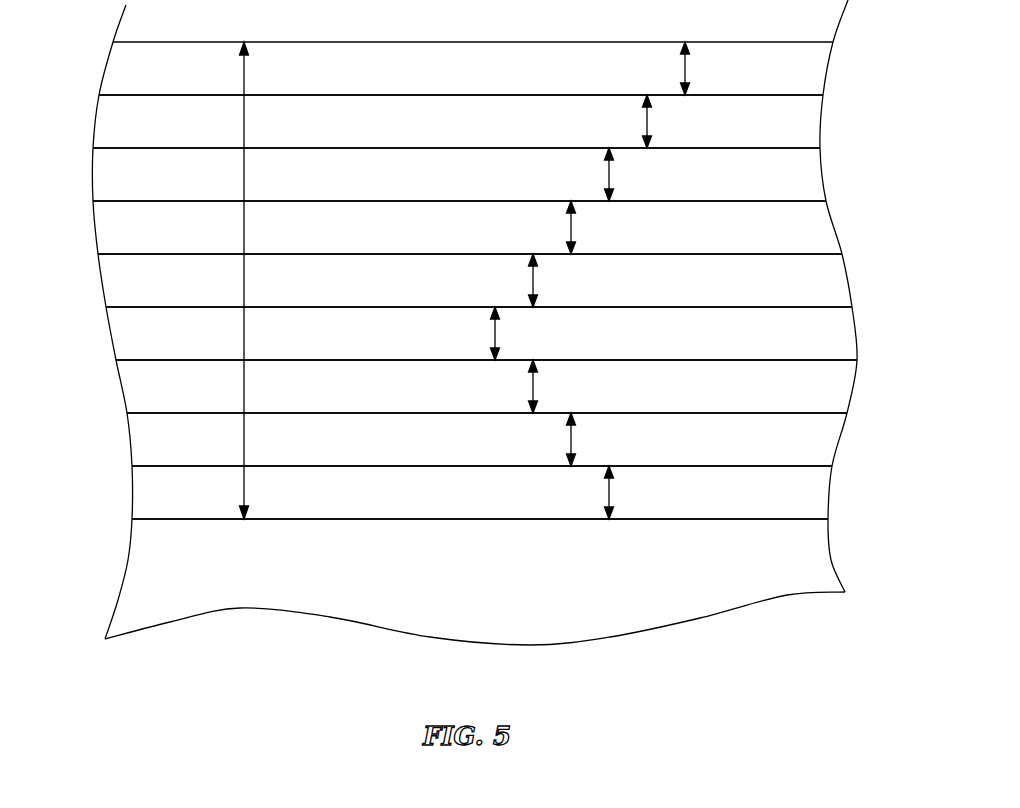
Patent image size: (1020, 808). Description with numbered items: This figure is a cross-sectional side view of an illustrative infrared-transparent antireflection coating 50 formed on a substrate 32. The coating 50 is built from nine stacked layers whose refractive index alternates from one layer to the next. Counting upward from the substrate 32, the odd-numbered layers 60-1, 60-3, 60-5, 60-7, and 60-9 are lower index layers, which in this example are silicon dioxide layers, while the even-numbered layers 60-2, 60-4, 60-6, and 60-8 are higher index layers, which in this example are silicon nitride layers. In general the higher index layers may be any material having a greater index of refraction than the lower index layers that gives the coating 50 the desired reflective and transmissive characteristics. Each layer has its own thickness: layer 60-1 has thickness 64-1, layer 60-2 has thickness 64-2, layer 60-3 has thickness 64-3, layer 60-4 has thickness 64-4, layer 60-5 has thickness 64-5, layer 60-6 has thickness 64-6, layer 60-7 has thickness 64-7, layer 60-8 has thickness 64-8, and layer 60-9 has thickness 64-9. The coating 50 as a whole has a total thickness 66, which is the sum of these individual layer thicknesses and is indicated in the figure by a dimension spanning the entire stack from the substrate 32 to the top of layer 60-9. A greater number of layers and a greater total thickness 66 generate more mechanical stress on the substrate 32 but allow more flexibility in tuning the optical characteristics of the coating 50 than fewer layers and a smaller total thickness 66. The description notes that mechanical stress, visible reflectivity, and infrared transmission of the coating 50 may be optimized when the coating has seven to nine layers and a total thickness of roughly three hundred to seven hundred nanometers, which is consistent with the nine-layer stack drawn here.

The coating 50 is at (62, 42).
The substrate 32 is at (818, 548).
The total thickness 66 is at (247, 66).
The layer 60-1 is at (822, 494).
The layer 60-2 is at (832, 442).
The layer 60-3 is at (844, 388).
The layer 60-4 is at (846, 336).
The layer 60-5 is at (839, 282).
The layer 60-6 is at (826, 230).
The layer 60-7 is at (815, 176).
The layer 60-8 is at (814, 124).
The layer 60-9 is at (820, 70).
The thickness 64-1 is at (612, 490).
The thickness 64-2 is at (574, 438).
The thickness 64-3 is at (536, 384).
The thickness 64-4 is at (498, 332).
The thickness 64-5 is at (536, 278).
The thickness 64-6 is at (574, 226).
The thickness 64-7 is at (612, 172).
The thickness 64-8 is at (650, 120).
The thickness 64-9 is at (688, 66).